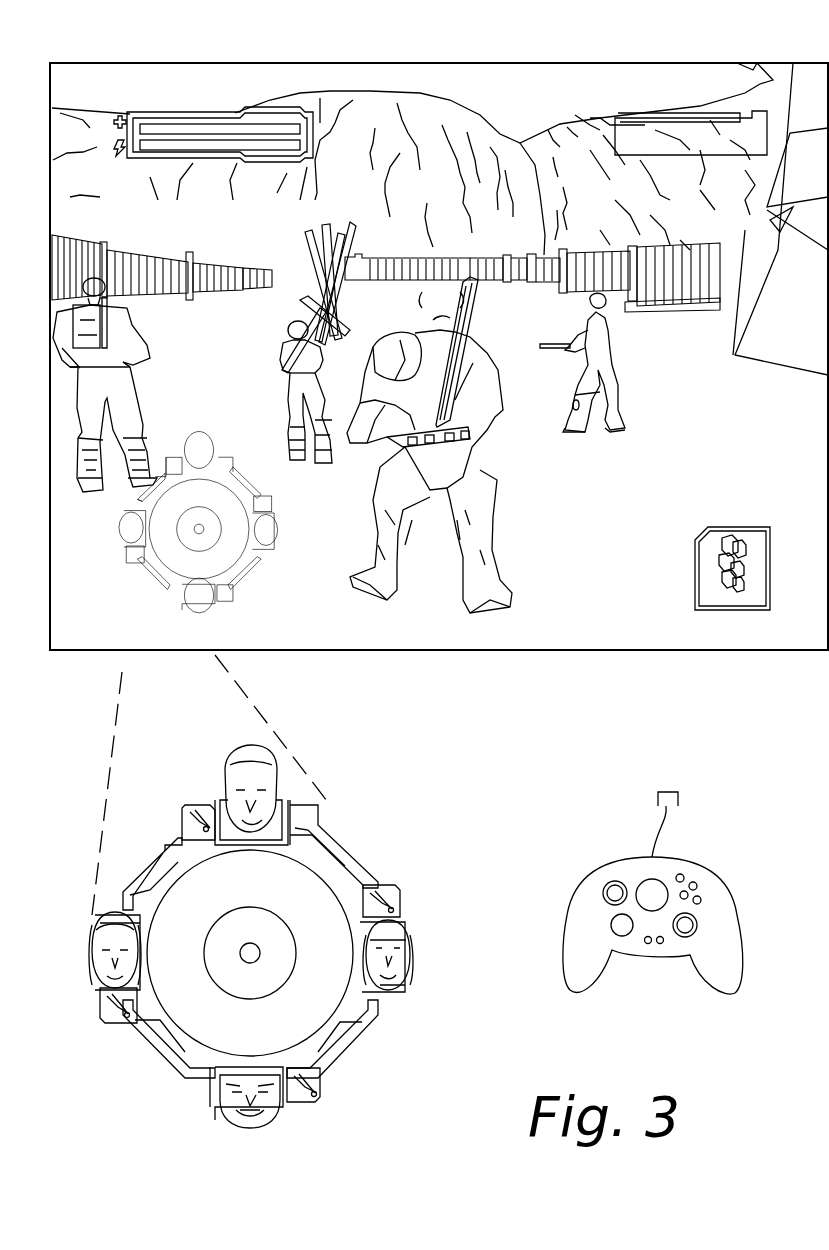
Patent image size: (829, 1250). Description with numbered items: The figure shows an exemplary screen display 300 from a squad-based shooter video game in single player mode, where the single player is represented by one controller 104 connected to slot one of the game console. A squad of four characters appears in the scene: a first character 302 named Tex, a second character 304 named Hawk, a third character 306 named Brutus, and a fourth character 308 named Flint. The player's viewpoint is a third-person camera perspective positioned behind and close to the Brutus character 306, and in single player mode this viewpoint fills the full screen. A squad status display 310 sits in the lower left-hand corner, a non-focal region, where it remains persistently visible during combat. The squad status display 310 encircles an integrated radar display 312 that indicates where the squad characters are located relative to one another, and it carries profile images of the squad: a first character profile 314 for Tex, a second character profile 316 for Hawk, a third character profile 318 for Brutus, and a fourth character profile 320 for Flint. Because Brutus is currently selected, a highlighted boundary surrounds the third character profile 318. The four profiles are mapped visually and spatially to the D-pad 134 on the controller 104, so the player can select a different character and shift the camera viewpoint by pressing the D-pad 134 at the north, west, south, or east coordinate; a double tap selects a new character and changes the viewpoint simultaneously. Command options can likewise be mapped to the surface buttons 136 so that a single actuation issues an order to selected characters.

The screen display 300 is at (232, 50).
The first character 302 is at (145, 324).
The second character 304 is at (293, 392).
The third character 306 is at (380, 500).
The fourth character 308 is at (612, 346).
The squad status display 310 is at (140, 590).
The radar display 312 is at (250, 953).
The first character profile 314 is at (236, 766).
The second character profile 316 is at (90, 952).
The third character profile 318 is at (252, 1122).
The fourth character profile 320 is at (408, 932).
The controller 104 is at (578, 990).
The D-pad 134 is at (612, 925).
The surface buttons 136 is at (695, 888).